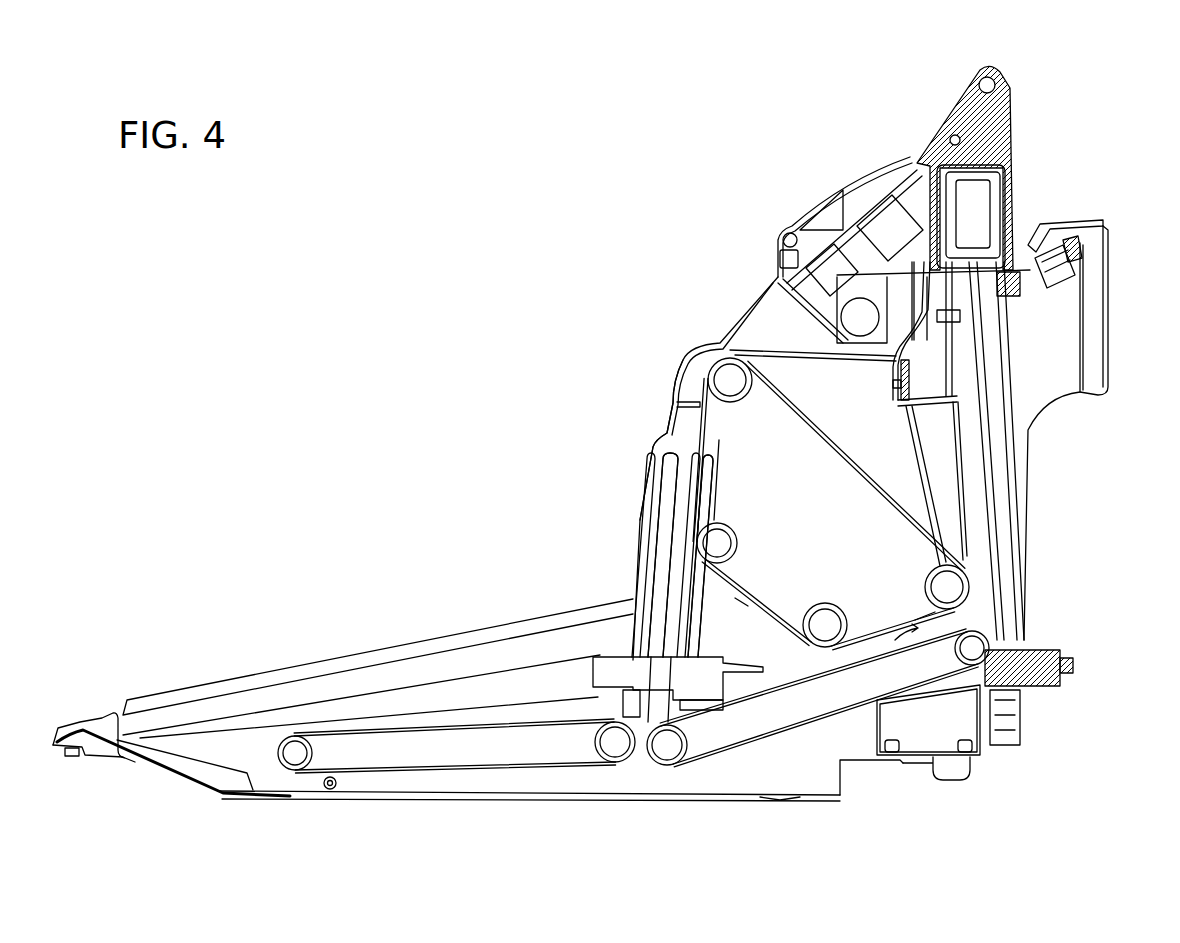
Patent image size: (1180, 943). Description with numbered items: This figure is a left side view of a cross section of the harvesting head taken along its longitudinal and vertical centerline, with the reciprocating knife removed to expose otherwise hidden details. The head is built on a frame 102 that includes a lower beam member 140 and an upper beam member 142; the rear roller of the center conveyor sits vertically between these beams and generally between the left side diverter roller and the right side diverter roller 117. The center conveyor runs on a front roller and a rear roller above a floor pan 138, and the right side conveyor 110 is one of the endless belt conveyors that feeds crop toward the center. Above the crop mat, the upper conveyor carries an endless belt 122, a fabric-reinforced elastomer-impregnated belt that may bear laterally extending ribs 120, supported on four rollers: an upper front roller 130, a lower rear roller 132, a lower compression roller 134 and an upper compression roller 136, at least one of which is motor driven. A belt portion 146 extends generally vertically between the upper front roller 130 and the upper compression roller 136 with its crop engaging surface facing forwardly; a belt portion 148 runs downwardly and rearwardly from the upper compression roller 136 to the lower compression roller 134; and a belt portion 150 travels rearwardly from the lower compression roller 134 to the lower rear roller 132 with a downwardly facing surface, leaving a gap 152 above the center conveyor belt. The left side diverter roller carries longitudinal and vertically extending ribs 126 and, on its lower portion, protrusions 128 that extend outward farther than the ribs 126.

The frame 102 is at (913, 133).
The right side conveyor 110 is at (240, 705).
The right side diverter roller 117 is at (683, 490).
The ribs 120 is at (960, 548).
The endless belt 122 is at (893, 503).
The ribs 126 is at (665, 525).
The protrusions 128 is at (598, 775).
The upper front roller 130 is at (705, 372).
The lower rear roller 132 is at (970, 567).
The lower compression roller 134 is at (833, 653).
The upper compression roller 136 is at (740, 545).
The floor pan 138 is at (480, 800).
The lower beam member 140 is at (902, 640).
The upper beam member 142 is at (1013, 183).
The belt portion 146 is at (690, 415).
The belt portion 148 is at (740, 600).
The belt portion 150 is at (940, 600).
The gap 152 is at (920, 627).